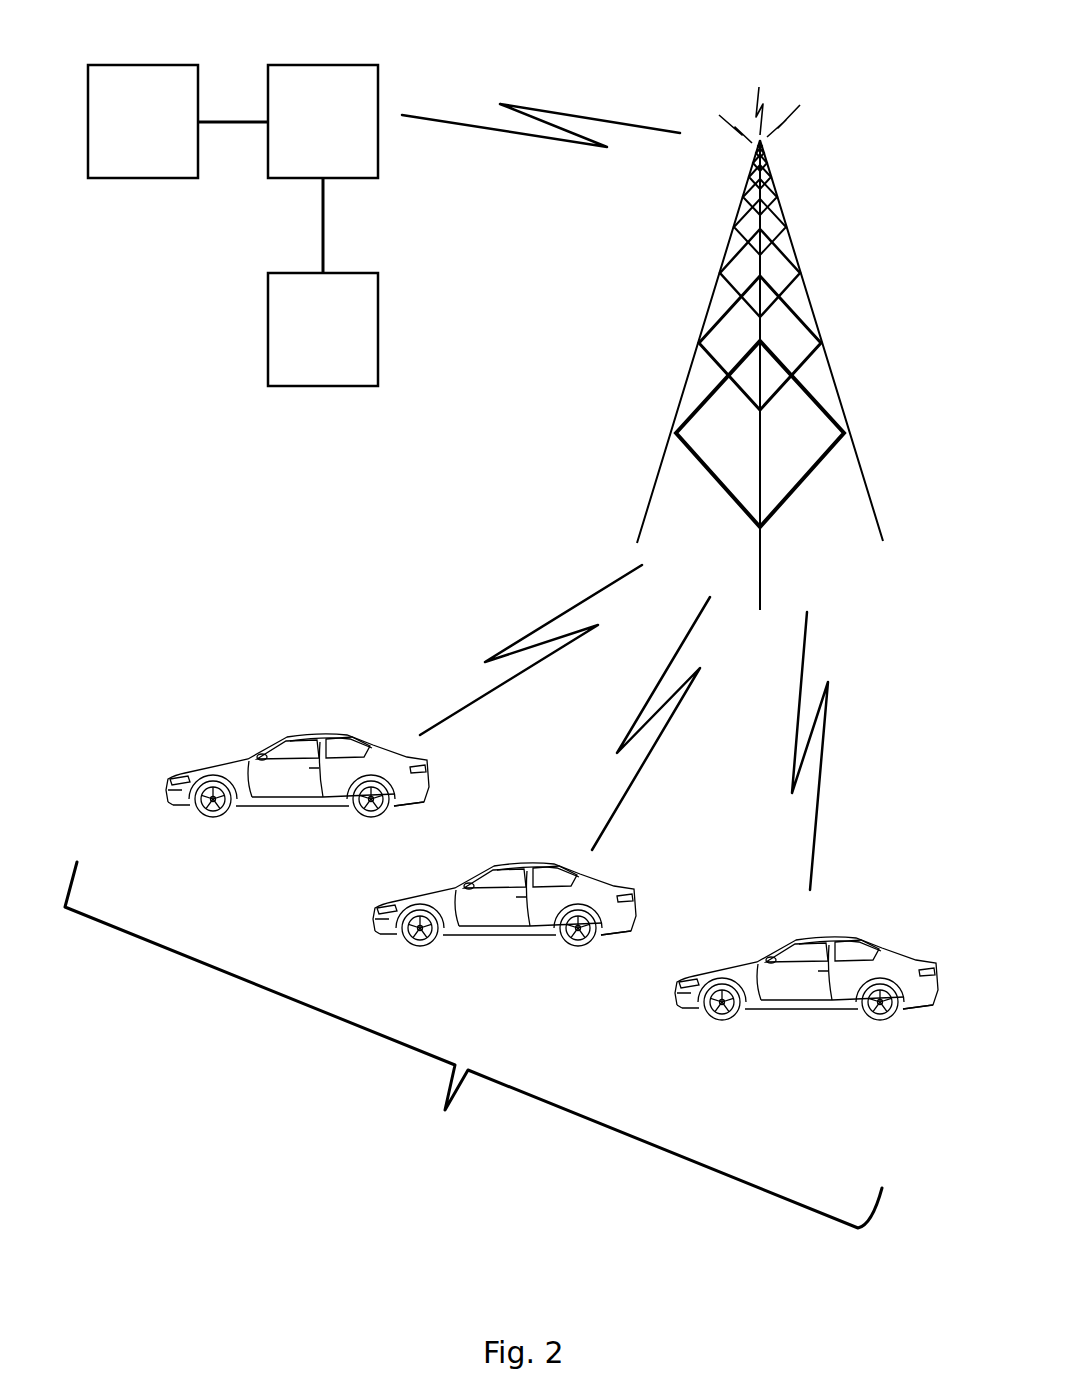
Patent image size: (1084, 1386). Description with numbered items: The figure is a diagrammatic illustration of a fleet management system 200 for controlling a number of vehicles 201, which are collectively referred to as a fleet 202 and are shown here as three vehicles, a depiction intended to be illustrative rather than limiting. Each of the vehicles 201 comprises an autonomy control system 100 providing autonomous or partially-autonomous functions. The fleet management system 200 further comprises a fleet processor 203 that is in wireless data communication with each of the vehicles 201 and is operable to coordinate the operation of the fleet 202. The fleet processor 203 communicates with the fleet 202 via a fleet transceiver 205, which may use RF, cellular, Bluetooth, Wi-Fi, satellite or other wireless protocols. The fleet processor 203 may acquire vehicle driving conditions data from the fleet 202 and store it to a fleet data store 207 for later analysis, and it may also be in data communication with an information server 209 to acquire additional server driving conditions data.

The fleet management system 200 is at (872, 61).
The fleet processor 203 is at (323, 121).
The fleet data store 207 is at (143, 121).
The information server 209 is at (323, 329).
The fleet transceiver 205 is at (790, 231).
The autonomy control system 100 is at (250, 827).
The vehicle 201 is at (210, 820).
The fleet 202 is at (473, 1045).